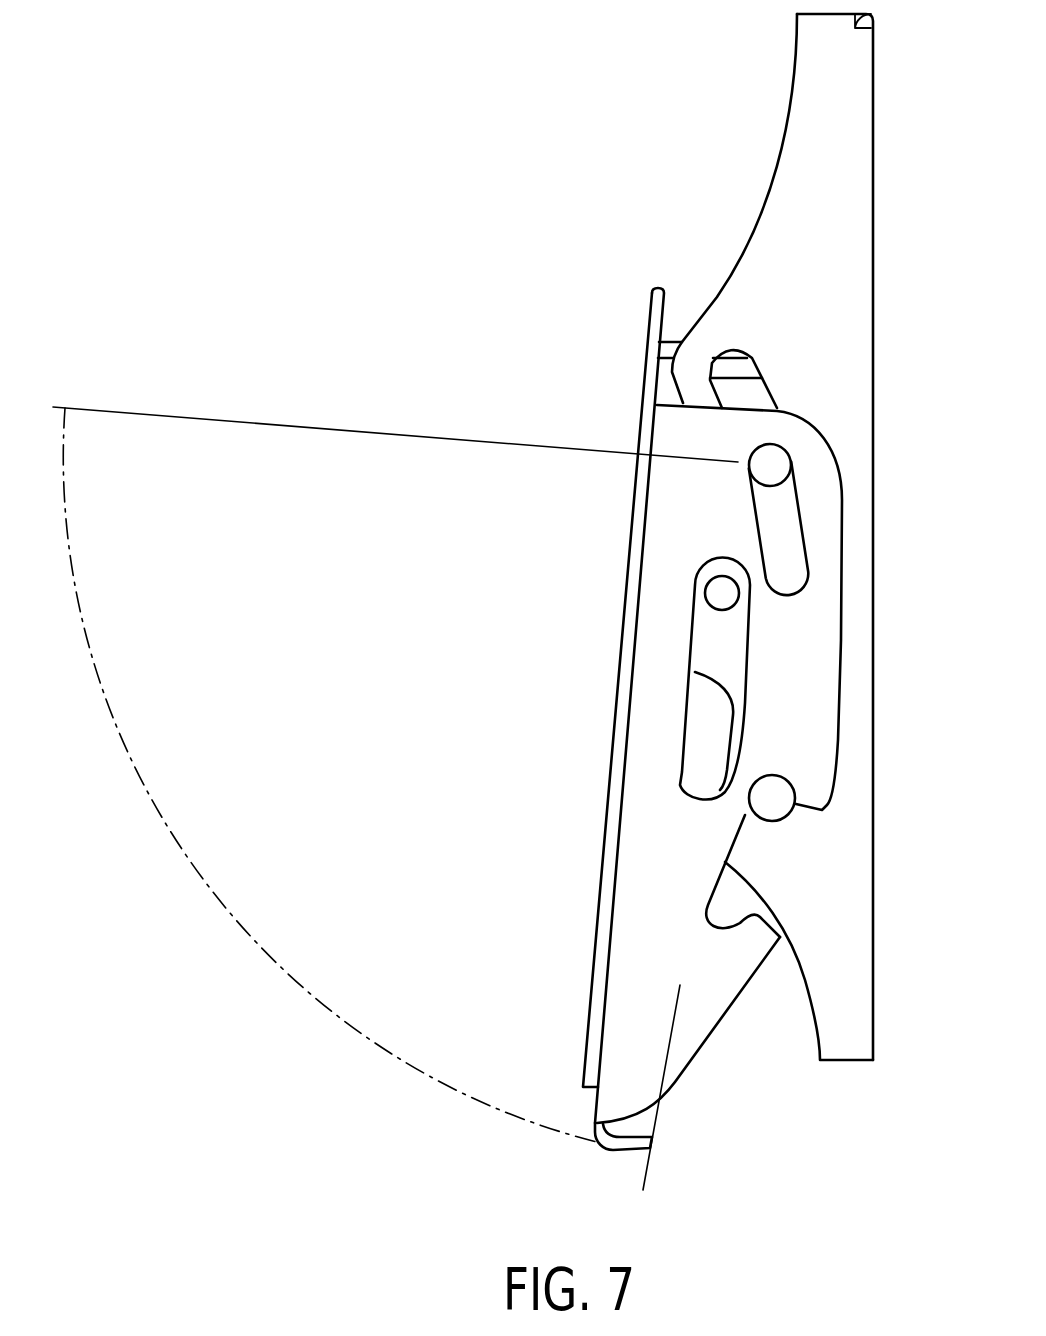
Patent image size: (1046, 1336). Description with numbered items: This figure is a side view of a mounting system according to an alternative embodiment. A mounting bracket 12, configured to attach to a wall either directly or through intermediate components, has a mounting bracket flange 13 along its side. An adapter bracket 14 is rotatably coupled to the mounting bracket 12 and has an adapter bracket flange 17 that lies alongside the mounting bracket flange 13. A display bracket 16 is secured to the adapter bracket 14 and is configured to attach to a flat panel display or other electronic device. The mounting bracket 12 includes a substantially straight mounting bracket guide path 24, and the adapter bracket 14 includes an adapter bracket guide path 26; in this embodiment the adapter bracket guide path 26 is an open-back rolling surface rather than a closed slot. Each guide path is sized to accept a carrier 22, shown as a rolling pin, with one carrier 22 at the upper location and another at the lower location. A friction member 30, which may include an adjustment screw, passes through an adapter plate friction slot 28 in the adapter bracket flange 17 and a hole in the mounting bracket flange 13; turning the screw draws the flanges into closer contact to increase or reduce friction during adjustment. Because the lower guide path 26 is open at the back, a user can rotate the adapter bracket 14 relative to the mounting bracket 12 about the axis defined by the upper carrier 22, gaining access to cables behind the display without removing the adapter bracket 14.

The mounting bracket 12 is at (850, 260).
The mounting bracket flange 13 is at (847, 1038).
The adapter bracket 14 is at (683, 1047).
The display bracket 16 is at (660, 290).
The adapter bracket flange 17 is at (633, 917).
The carrier 22 is at (777, 457).
The mounting bracket guide path 24 is at (737, 367).
The adapter bracket guide path 26 is at (792, 580).
The adapter plate friction slot 28 is at (697, 778).
The friction member 30 is at (720, 593).